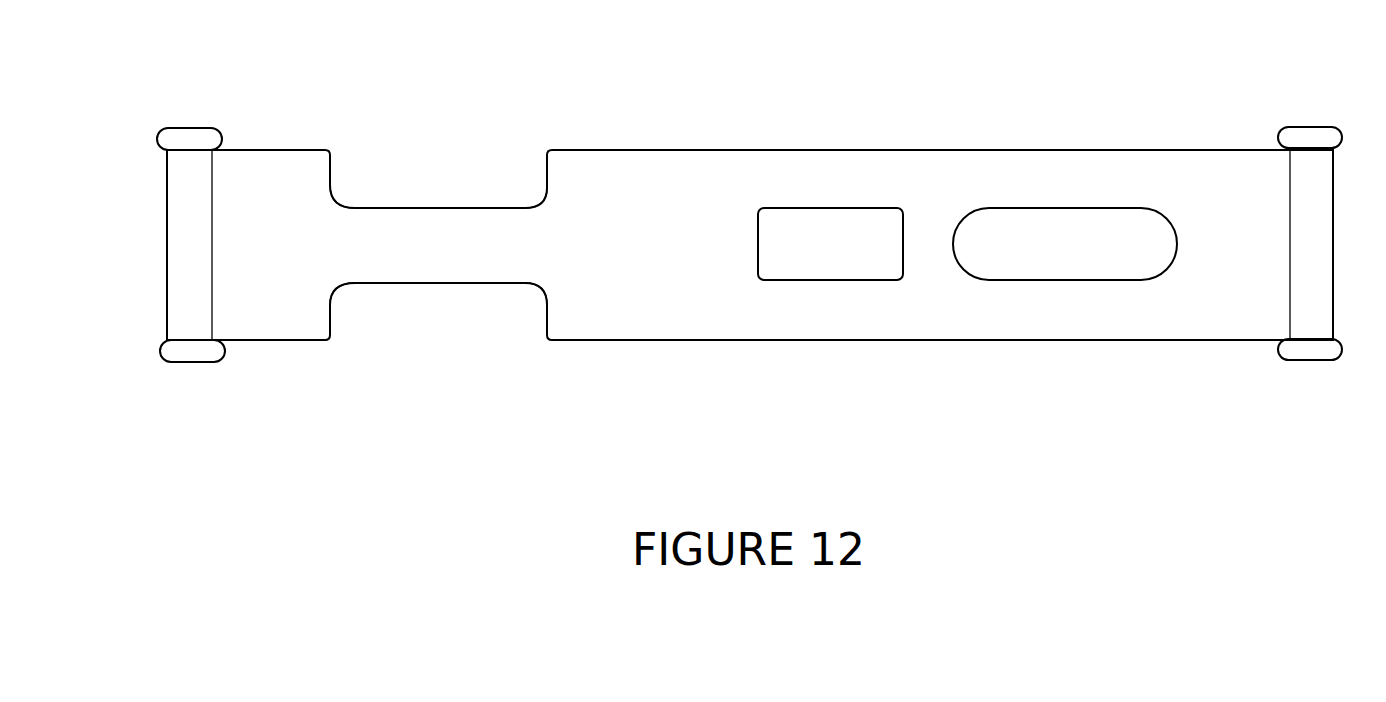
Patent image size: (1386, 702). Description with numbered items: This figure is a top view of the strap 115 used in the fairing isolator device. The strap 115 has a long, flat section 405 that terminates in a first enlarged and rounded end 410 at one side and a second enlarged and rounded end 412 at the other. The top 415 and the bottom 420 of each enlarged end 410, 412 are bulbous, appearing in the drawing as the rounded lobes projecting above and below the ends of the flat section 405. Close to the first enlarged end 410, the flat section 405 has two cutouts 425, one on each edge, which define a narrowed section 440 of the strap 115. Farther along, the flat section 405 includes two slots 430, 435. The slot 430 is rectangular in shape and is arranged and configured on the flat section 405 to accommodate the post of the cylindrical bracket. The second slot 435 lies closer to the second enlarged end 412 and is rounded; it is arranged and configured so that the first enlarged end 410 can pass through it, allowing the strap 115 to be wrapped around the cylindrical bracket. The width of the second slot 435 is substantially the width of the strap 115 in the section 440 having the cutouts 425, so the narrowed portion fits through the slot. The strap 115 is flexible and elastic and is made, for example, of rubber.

The strap 115 is at (630, 145).
The flat section 405 is at (632, 348).
The first enlarged end 410 is at (158, 238).
The second enlarged end 412 is at (1340, 297).
The top 415 is at (183, 128).
The bottom 420 is at (188, 364).
The cutouts 425 is at (407, 195).
The slot 430 is at (810, 218).
The second slot 435 is at (1025, 225).
The section 440 is at (462, 205).